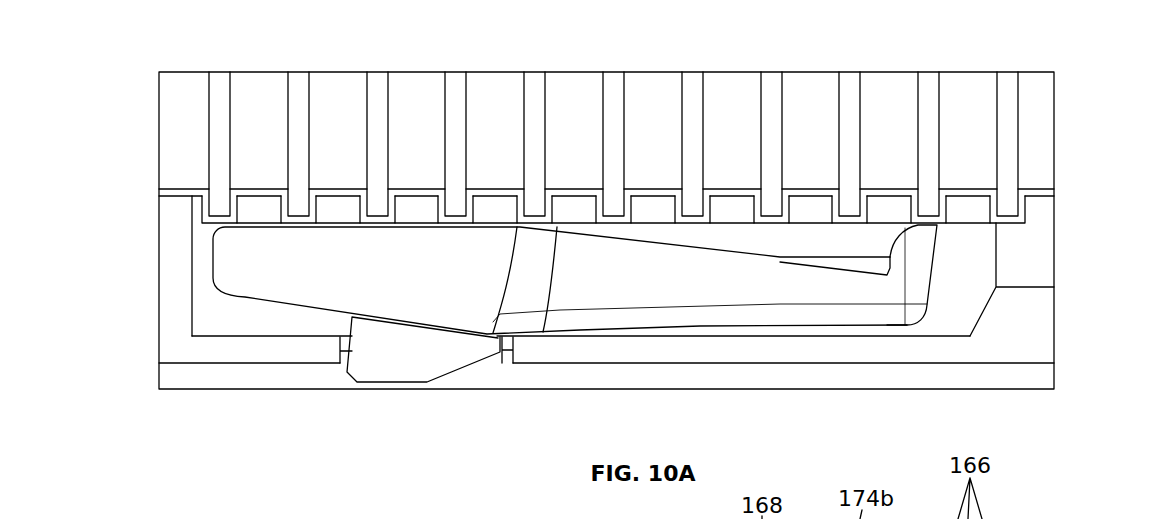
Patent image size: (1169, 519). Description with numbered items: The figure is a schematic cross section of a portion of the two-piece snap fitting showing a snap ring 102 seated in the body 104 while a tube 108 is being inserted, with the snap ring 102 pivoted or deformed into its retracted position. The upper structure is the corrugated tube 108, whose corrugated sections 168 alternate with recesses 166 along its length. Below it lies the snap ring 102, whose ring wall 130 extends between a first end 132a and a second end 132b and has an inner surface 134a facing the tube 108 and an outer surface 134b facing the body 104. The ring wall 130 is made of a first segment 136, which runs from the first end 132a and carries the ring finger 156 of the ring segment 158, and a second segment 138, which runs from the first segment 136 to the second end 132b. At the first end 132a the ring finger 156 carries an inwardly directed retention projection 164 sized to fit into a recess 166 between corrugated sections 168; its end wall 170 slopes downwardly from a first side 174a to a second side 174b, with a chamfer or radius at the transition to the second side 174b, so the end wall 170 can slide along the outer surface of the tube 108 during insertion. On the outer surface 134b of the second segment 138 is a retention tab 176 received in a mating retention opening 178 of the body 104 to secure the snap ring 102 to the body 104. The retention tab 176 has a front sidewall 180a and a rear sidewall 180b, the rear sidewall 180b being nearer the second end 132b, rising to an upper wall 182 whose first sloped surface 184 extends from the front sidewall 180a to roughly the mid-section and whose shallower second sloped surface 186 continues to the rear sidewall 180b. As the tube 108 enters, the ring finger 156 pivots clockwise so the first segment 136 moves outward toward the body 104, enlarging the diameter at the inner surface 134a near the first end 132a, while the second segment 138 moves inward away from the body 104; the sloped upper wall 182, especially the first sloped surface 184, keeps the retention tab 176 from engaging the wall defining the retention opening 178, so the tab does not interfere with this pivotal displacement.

The snap ring 102 is at (253, 262).
The body 104 is at (1020, 340).
The tube 108 is at (1035, 152).
The ring wall 130 is at (332, 290).
The first end 132a is at (997, 287).
The second end 132b is at (303, 287).
The inner surface 134a is at (797, 257).
The outer surface 134b is at (853, 327).
The first segment 136 is at (770, 315).
The second segment 138 is at (338, 338).
The ring finger 156 is at (660, 280).
The ring segment 158 is at (388, 245).
The retention projection 164 is at (930, 252).
The recess 166 is at (1035, 203).
The corrugated sections 168 is at (770, 212).
The end wall 170 is at (942, 223).
The first side 174a is at (940, 232).
The second side 174b is at (890, 257).
The retention tab 176 is at (393, 355).
The retention opening 178 is at (503, 360).
The front sidewall 180a is at (517, 347).
The rear sidewall 180b is at (340, 351).
The upper wall 182 is at (417, 383).
The first sloped surface 184 is at (453, 373).
The second sloped surface 186 is at (396, 383).